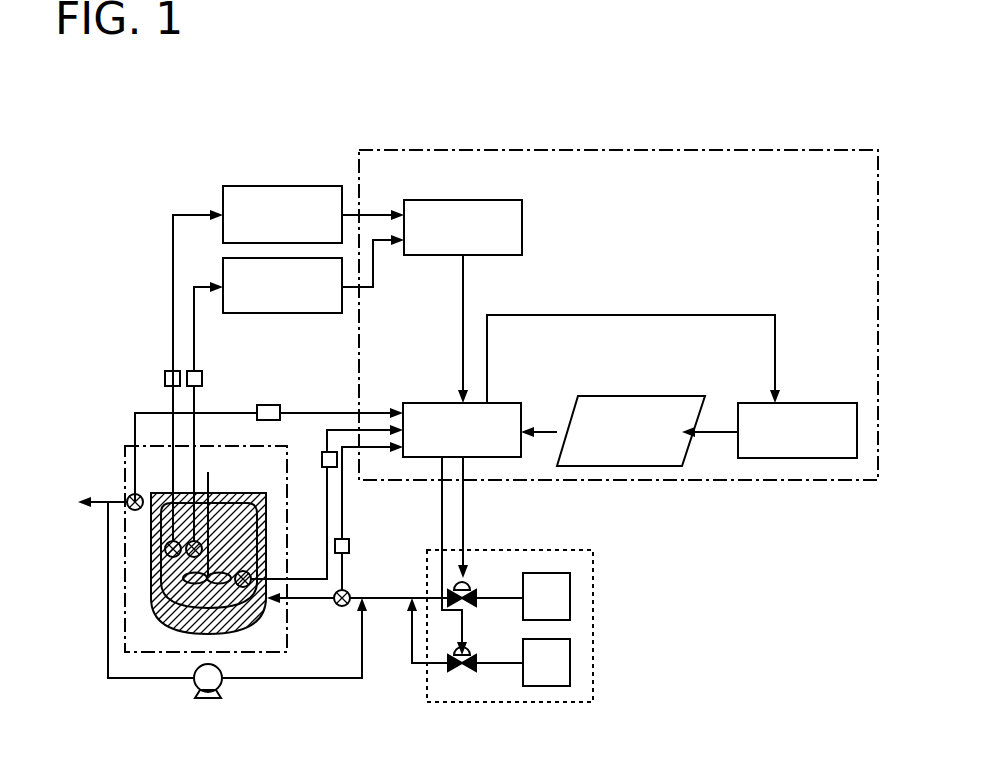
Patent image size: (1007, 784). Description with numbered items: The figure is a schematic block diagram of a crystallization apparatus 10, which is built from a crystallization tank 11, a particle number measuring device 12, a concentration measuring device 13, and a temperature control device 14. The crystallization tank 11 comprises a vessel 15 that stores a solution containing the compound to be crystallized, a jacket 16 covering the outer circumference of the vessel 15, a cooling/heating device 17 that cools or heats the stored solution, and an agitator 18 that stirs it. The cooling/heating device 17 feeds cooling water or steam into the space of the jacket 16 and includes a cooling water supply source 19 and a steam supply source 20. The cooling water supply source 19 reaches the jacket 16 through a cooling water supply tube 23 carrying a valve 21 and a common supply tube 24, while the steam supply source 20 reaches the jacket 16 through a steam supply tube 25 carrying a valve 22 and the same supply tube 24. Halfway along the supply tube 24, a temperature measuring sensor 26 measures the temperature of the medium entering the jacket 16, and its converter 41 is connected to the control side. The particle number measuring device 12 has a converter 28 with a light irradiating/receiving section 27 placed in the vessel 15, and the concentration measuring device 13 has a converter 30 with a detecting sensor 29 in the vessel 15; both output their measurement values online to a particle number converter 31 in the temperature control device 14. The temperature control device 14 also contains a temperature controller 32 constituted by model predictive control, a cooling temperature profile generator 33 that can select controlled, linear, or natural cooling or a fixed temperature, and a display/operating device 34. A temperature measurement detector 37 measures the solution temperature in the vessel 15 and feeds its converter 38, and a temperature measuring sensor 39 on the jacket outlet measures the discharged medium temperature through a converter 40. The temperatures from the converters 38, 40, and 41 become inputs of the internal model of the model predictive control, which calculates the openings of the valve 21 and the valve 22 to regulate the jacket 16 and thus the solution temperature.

The crystallization apparatus 10 is at (700, 118).
The crystallization tank 11 is at (125, 446).
The particle number measuring device 12 is at (302, 313).
The concentration measuring device 13 is at (302, 186).
The temperature control device 14 is at (438, 150).
The vessel 15 is at (158, 612).
The jacket 16 is at (238, 628).
The cooling/heating device 17 is at (578, 550).
The agitator 18 is at (208, 490).
The cooling water supply source 19 is at (543, 573).
The steam supply source 20 is at (548, 686).
The valve 21 is at (477, 603).
The valve 22 is at (463, 671).
The cooling water supply tube 23 is at (415, 597).
The supply tube 24 is at (387, 602).
The steam supply tube 25 is at (418, 663).
The temperature measuring sensor 26 is at (350, 592).
The light irradiating/receiving section 27 is at (190, 557).
The converter 28 is at (202, 378).
The detecting sensor 29 is at (165, 549).
The converter 30 is at (165, 378).
The particle number converter 31 is at (490, 200).
The temperature controller 32 is at (506, 403).
The cooling temperature profile generator 33 is at (660, 396).
The display/operating device 34 is at (803, 403).
The temperature measurement detector 37 is at (249, 574).
The converter 38 is at (322, 459).
The temperature measuring sensor 39 is at (130, 496).
The converter 40 is at (270, 405).
The converter 41 is at (349, 546).